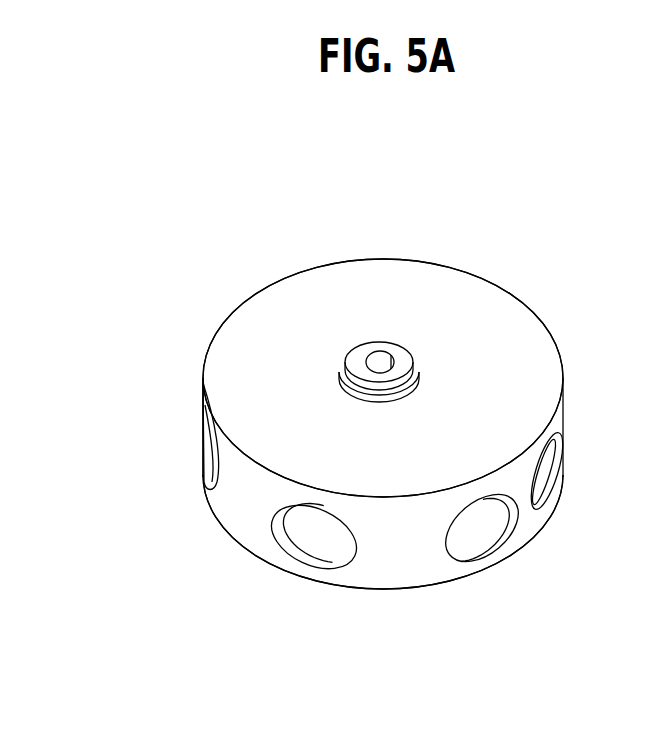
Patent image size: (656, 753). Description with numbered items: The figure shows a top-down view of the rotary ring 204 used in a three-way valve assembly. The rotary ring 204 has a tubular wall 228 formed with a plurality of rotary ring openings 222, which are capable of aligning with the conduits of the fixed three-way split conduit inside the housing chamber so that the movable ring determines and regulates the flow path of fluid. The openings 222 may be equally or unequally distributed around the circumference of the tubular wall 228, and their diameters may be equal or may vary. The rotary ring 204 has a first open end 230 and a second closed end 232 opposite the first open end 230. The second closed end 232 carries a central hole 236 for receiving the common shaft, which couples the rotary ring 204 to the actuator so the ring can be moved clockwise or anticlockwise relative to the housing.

The rotary ring 204 is at (165, 168).
The rotary ring openings 222 is at (305, 556).
The tubular wall 228 is at (257, 487).
The first open end 230 is at (277, 567).
The second closed end 232 is at (257, 317).
The central hole 236 is at (385, 372).